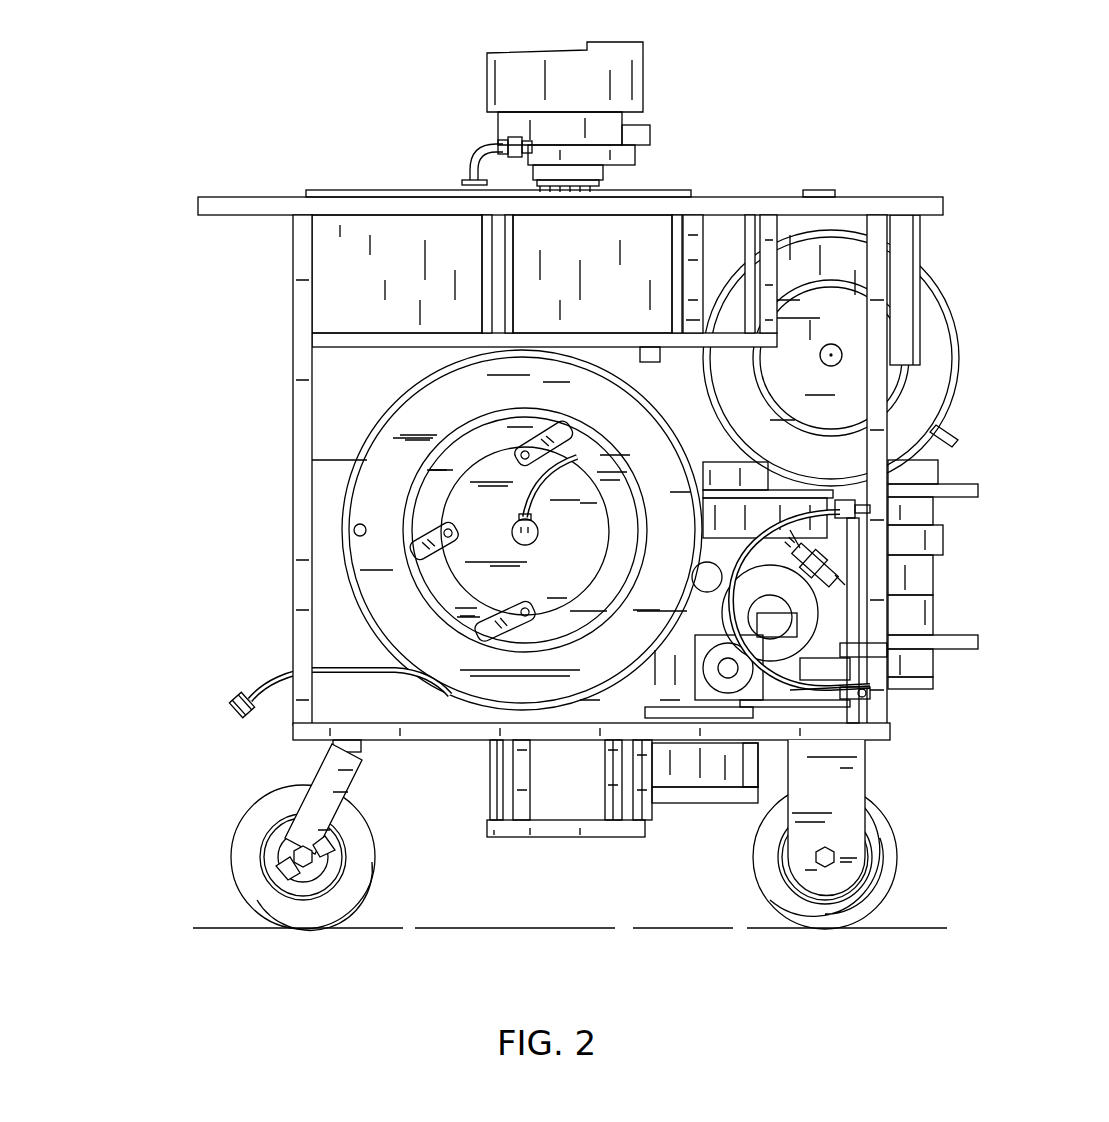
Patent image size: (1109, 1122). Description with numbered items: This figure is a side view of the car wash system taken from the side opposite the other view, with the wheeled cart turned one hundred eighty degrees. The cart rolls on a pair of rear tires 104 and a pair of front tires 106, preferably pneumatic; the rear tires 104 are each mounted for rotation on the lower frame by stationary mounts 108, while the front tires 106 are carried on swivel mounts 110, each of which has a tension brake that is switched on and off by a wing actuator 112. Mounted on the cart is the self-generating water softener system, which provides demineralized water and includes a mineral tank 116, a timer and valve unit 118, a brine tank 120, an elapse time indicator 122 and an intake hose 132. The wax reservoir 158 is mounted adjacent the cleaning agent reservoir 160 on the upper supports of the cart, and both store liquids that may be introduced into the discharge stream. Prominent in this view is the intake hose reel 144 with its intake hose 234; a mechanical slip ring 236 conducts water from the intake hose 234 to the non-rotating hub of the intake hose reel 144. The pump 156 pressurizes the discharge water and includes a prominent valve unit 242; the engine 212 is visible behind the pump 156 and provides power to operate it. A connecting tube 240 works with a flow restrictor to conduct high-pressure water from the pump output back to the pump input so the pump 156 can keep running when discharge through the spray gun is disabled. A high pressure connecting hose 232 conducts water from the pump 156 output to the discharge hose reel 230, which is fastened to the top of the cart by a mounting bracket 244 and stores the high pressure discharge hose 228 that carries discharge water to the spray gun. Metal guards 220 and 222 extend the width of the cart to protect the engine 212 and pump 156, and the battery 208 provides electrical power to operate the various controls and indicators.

The rear tires 104 is at (898, 862).
The front tires 106 is at (378, 868).
The stationary mounts 108 is at (843, 810).
The swivel mounts 110 is at (340, 772).
The wing actuators 112 is at (287, 875).
The mineral tank 116 is at (645, 357).
The timer and valve unit 118 is at (617, 57).
The brine tank 120 is at (318, 492).
The elapse time indicator 122 is at (816, 190).
The intake hose 132 is at (476, 165).
The intake hose reel 144 is at (345, 590).
The pump 156 is at (812, 690).
The wax reservoir 158 is at (637, 238).
The cleaning agent reservoir 160 is at (348, 230).
The battery 208 is at (683, 767).
The engine 212 is at (810, 622).
The metal guard 220 is at (978, 484).
The metal guard 222 is at (978, 643).
The discharge hose 228 is at (950, 443).
The discharge hose reel 230 is at (935, 280).
The high pressure connecting hose 232 is at (818, 568).
The intake hose 234 is at (528, 497).
The slip ring 236 is at (535, 543).
The connecting tube 240 is at (815, 672).
The valve unit 242 is at (868, 698).
The mounting bracket 244 is at (847, 237).